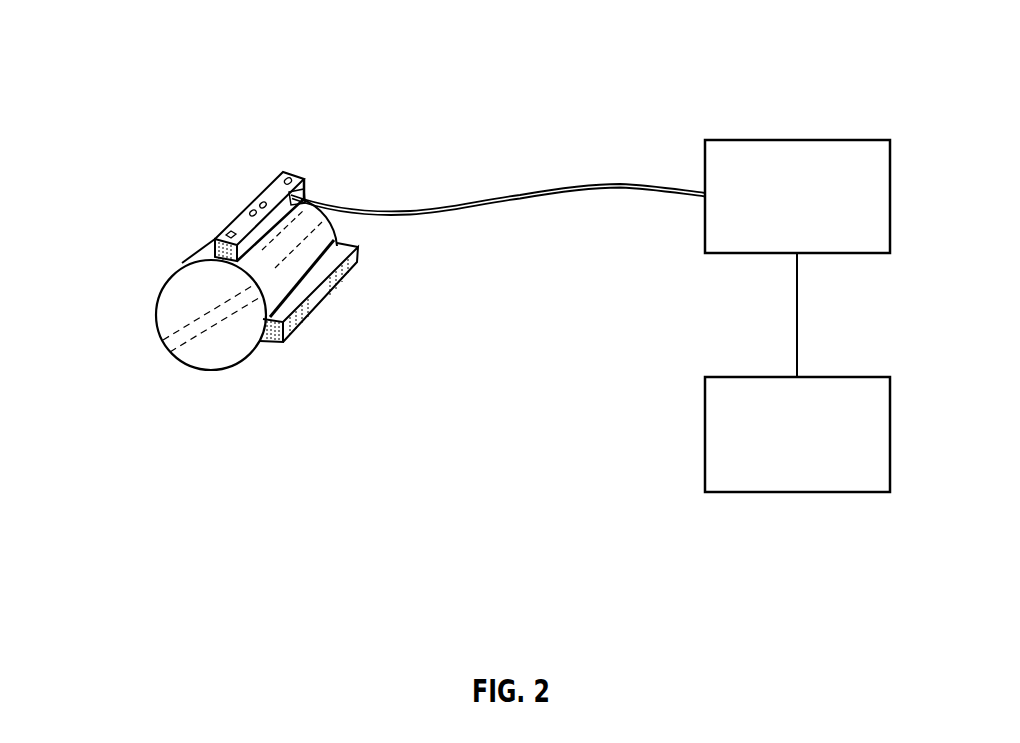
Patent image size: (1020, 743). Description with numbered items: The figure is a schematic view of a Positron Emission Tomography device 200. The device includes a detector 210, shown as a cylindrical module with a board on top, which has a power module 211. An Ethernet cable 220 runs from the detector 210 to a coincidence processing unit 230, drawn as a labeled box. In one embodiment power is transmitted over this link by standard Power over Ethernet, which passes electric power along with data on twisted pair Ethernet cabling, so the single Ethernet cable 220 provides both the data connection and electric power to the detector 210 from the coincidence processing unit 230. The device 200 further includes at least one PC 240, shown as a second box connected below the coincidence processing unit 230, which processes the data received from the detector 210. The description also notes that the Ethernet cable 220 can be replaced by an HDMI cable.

The Positron Emission Tomography device 200 is at (224, 90).
The detector 210 is at (270, 200).
The power module 211 is at (168, 218).
The Ethernet cable 220 is at (577, 193).
The coincidence processing unit 230 is at (822, 140).
The PC 240 is at (820, 377).